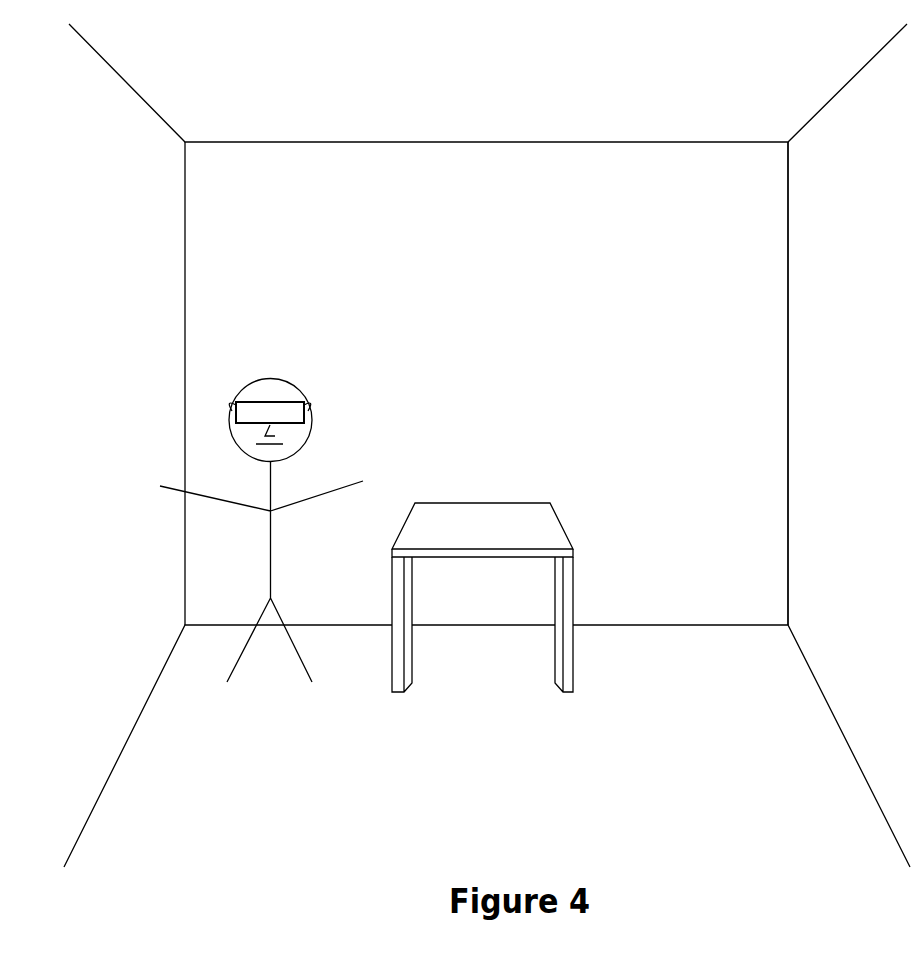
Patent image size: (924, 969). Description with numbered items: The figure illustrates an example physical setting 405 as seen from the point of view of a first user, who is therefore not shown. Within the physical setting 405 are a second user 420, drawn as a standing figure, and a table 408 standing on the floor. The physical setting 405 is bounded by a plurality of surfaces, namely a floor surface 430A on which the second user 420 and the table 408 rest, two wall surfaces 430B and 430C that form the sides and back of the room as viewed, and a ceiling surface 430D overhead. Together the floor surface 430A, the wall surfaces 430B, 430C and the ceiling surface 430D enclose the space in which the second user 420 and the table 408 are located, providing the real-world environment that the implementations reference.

The physical setting 405 is at (487, 445).
The floor surface 430A is at (742, 682).
The wall surface 430B is at (875, 609).
The wall surface 430C is at (758, 562).
The ceiling surface 430D is at (788, 104).
The second user 420 is at (302, 351).
The table 408 is at (500, 502).